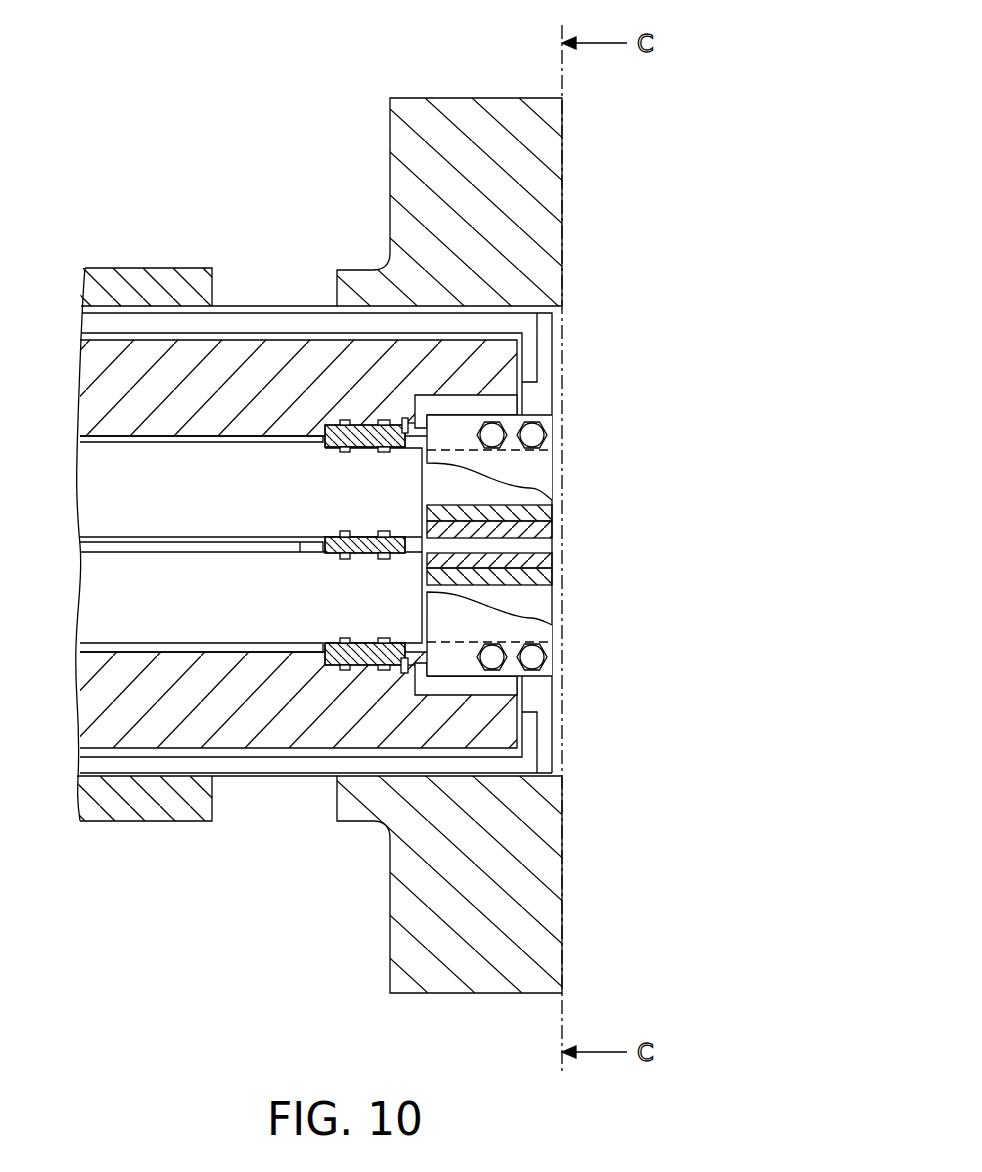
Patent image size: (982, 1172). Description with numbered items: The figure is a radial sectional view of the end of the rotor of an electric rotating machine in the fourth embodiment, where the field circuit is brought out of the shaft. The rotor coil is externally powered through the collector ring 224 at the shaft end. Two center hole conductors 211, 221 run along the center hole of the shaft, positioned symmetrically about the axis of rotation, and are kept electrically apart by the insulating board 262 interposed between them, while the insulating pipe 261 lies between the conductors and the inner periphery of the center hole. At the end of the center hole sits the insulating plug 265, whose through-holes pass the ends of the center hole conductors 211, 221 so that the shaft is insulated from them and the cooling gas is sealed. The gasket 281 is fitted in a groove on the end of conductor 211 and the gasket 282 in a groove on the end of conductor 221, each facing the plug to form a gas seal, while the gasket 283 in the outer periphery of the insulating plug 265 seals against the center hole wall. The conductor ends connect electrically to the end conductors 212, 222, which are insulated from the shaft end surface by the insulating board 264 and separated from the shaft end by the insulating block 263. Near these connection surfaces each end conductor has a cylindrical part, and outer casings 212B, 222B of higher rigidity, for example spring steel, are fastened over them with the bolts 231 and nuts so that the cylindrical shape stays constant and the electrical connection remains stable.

The center hole conductor 211 is at (103, 468).
The end conductor 212 is at (537, 392).
The outer casing 212B is at (532, 462).
The center hole conductor 221 is at (103, 578).
The end conductor 222 is at (537, 692).
The outer casing 222B is at (498, 561).
The collector ring 224 is at (130, 272).
The bolt 231 is at (532, 657).
The insulating pipe 261 is at (110, 648).
The insulating board 262 is at (108, 543).
The insulating block 263 is at (462, 403).
The insulating board 264 is at (518, 360).
The insulating plug 265 is at (370, 445).
The gasket 281 is at (343, 455).
The gasket 282 is at (345, 638).
The gasket 283 is at (340, 636).